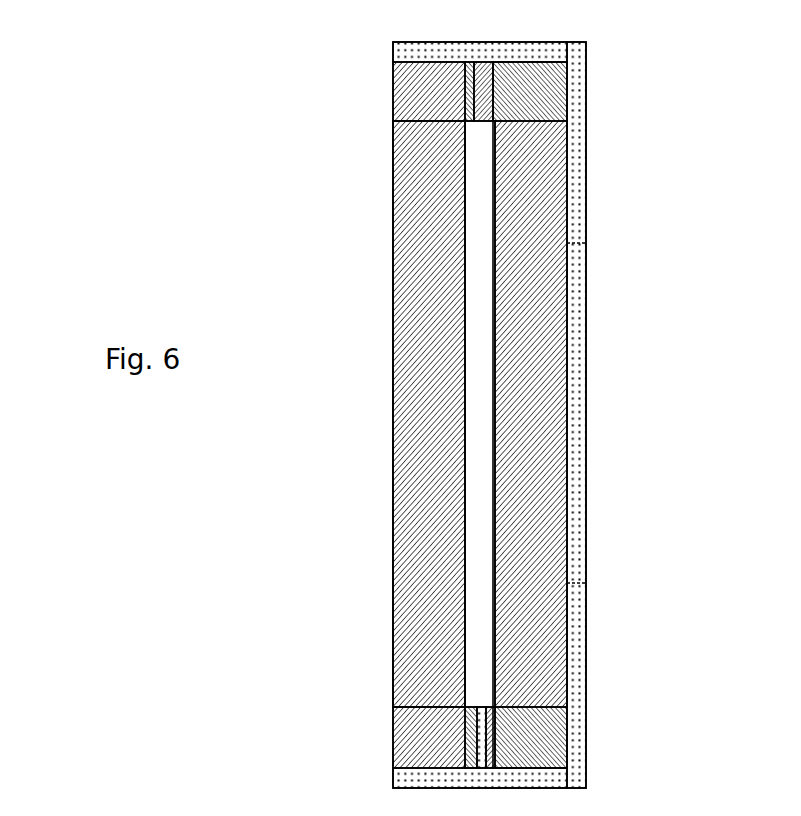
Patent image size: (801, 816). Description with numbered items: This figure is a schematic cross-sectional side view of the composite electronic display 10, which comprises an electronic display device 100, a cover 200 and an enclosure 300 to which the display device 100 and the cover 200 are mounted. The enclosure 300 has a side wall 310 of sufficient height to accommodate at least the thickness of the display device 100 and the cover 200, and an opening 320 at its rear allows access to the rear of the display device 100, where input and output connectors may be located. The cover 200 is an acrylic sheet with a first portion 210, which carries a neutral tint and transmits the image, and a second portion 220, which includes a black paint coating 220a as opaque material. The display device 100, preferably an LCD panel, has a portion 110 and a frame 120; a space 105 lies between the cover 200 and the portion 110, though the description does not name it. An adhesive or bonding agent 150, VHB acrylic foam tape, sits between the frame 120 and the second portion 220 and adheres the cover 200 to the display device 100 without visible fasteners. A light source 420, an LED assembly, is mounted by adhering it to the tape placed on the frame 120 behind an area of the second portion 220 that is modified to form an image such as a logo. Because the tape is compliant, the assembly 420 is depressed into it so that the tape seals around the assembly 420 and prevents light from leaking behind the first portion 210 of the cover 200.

The electronic display 10 is at (155, 184).
The electronic display device 100 is at (567, 309).
The gap 105 is at (495, 250).
The portion of the display device 110 is at (532, 373).
The frame of the display device 120 is at (540, 93).
The adhesive or bonding agent 150 is at (493, 78).
The cover 200 is at (393, 476).
The first portion of the cover 210 is at (427, 383).
The second portion of the cover 220 is at (415, 77).
The paint coating 220a is at (463, 92).
The enclosure 300 is at (587, 546).
The side wall 310 is at (478, 53).
The opening 320 is at (582, 467).
The light source 420 is at (495, 707).